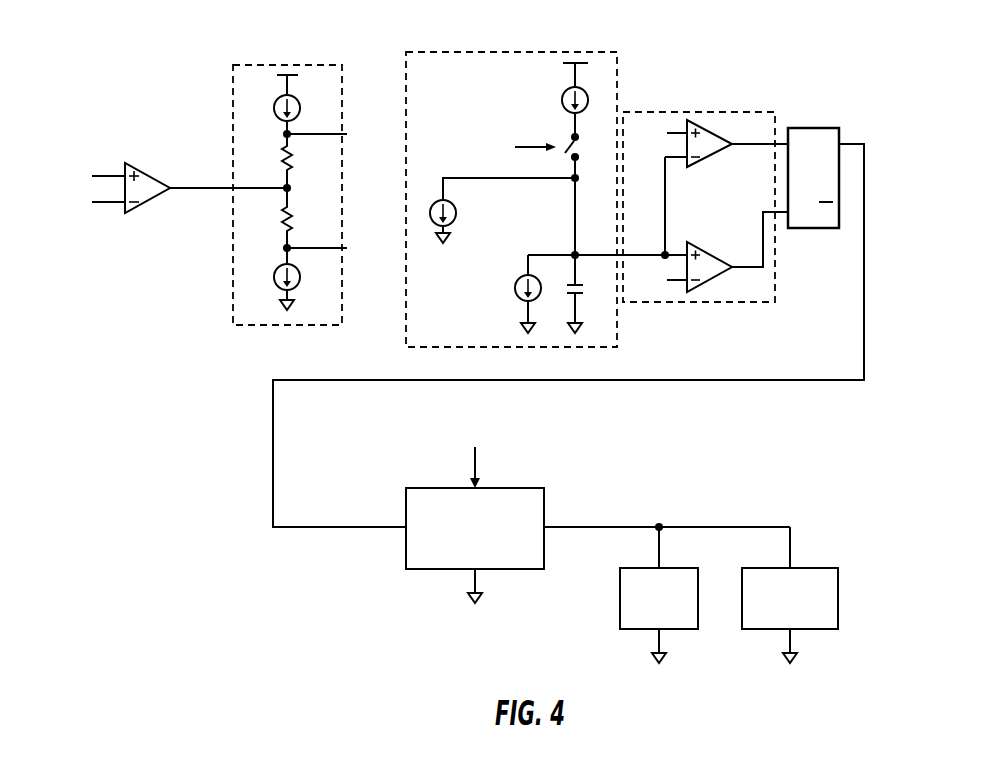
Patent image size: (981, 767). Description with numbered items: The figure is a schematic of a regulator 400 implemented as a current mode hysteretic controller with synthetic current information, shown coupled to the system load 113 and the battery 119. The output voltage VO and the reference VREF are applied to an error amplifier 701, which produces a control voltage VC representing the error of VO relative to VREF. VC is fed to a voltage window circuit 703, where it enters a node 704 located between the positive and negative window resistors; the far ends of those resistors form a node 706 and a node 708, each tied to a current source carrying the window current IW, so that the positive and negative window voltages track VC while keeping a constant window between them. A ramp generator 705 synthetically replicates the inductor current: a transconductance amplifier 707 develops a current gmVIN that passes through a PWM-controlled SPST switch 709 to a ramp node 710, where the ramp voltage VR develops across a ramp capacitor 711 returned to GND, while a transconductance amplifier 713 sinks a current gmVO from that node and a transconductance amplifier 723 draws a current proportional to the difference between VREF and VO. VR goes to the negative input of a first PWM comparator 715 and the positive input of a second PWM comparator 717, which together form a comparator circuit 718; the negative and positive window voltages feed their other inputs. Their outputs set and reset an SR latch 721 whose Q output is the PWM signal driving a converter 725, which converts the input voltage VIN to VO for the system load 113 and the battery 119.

The regulator 400 is at (203, 414).
The error amplifier 701 is at (144, 203).
The voltage window circuit 703 is at (233, 115).
The node 704 is at (293, 188).
The node 706 is at (290, 128).
The node 708 is at (298, 248).
The ramp generator 705 is at (617, 73).
The transconductance amplifier 707 is at (567, 93).
The single-pole, single-throw switch 709 is at (569, 147).
The transconductance amplifier 723 is at (440, 200).
The ramp node 710 is at (573, 255).
The transconductance amplifier 713 is at (520, 298).
The ramp capacitor 711 is at (583, 293).
The comparator circuit 718 is at (722, 112).
The first PWM comparator 715 is at (700, 156).
The second PWM comparator 717 is at (700, 252).
The SR latch 721 is at (801, 190).
The converter 725 is at (544, 502).
The system load 113 is at (620, 597).
The battery 119 is at (742, 585).